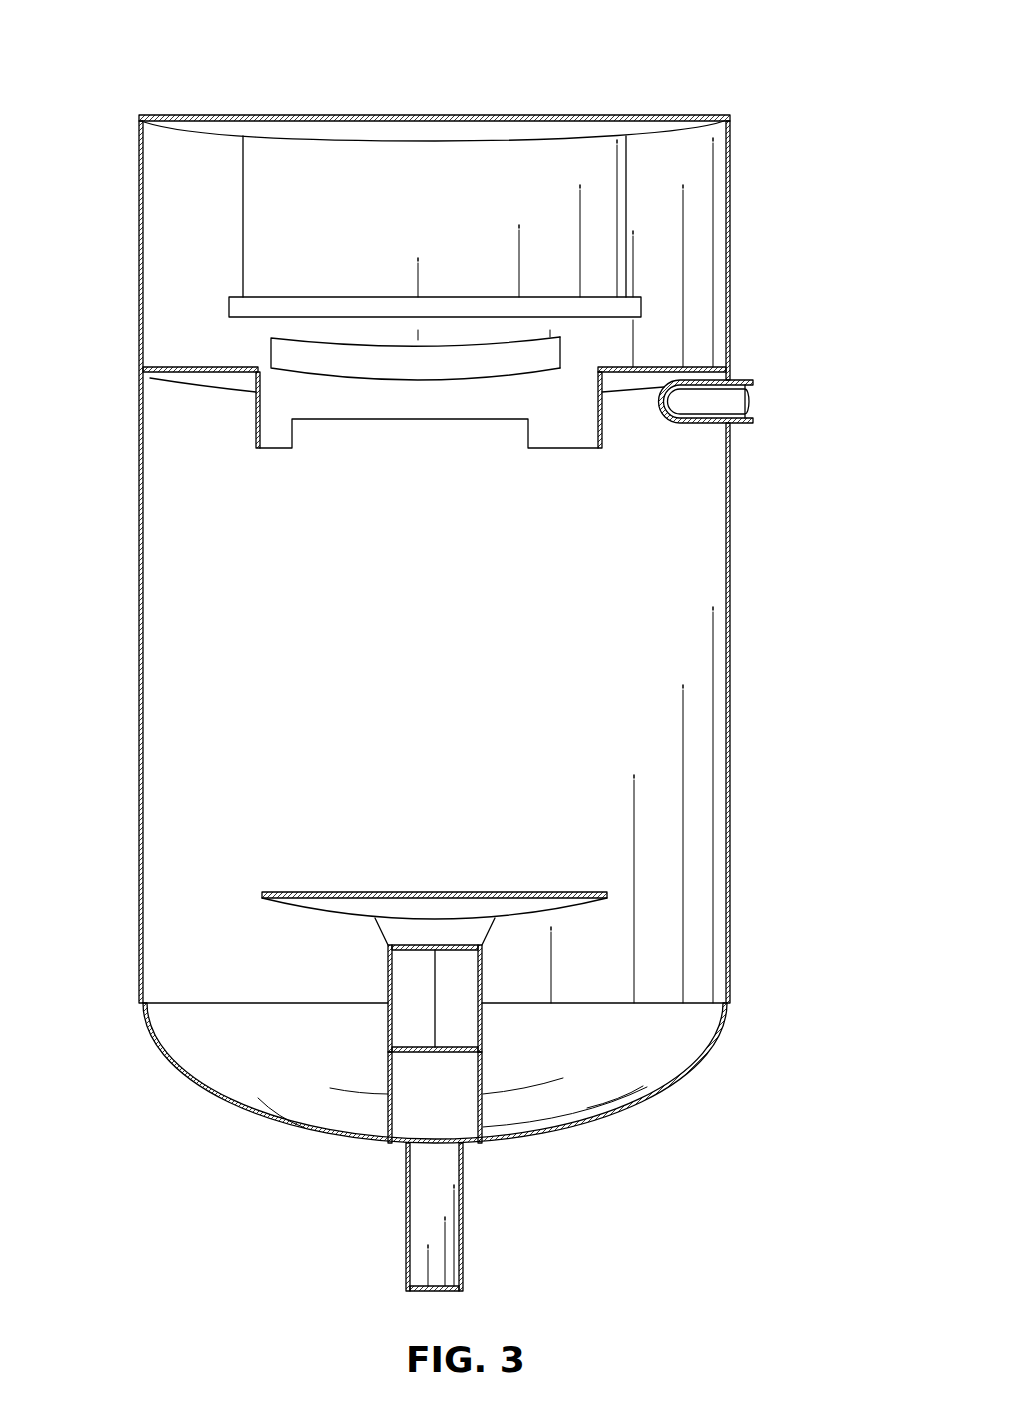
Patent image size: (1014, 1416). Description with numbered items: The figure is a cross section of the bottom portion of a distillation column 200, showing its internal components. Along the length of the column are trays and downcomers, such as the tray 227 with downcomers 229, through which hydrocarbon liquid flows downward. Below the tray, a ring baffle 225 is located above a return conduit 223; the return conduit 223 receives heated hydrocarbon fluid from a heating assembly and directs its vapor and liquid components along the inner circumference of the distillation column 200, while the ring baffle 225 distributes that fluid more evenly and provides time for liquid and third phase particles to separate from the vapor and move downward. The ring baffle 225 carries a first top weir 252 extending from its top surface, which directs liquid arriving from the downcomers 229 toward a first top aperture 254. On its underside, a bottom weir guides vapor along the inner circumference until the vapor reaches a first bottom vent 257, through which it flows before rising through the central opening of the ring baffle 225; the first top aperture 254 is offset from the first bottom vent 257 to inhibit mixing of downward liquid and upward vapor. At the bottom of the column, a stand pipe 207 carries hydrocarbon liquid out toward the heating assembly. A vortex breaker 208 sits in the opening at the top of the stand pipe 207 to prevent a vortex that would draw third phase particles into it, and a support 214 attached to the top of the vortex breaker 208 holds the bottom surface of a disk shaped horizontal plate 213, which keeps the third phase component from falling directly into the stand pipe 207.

The distillation column 200 is at (108, 40).
The stand pipe 207 is at (400, 1077).
The vortex breaker 208 is at (400, 998).
The horizontal plate 213 is at (262, 893).
The support 214 is at (378, 927).
The return conduit 223 is at (753, 402).
The ring baffle 225 is at (150, 378).
The tray 227 is at (720, 125).
The downcomers 229 is at (280, 161).
The first top weir 252 is at (278, 358).
The first top aperture 254 is at (562, 355).
The first bottom vent 257 is at (315, 438).